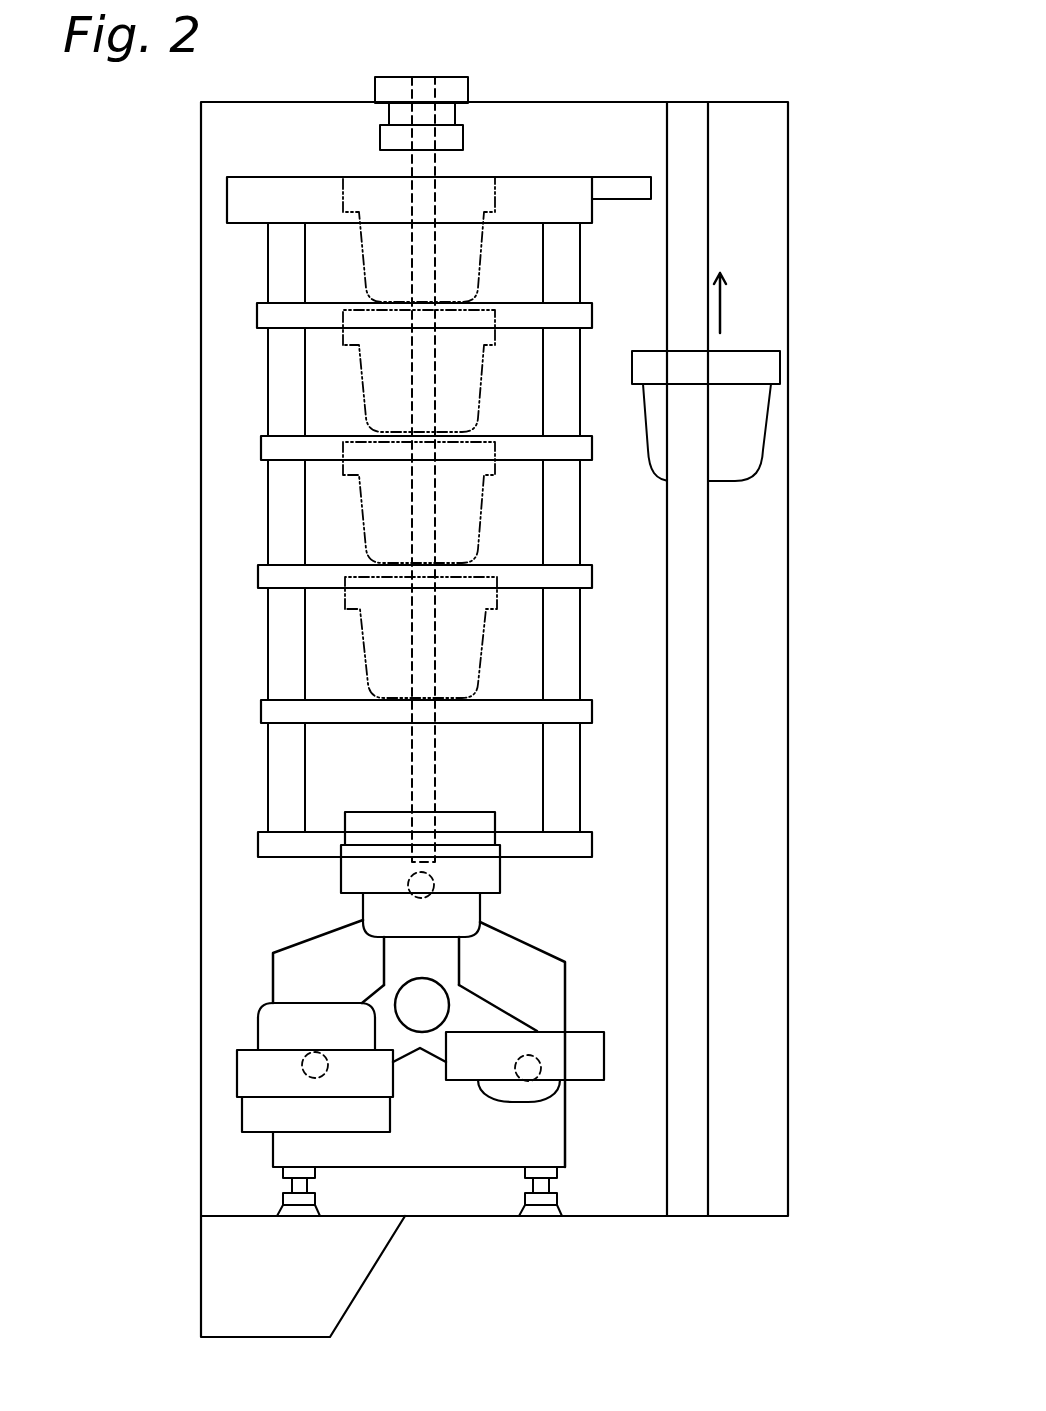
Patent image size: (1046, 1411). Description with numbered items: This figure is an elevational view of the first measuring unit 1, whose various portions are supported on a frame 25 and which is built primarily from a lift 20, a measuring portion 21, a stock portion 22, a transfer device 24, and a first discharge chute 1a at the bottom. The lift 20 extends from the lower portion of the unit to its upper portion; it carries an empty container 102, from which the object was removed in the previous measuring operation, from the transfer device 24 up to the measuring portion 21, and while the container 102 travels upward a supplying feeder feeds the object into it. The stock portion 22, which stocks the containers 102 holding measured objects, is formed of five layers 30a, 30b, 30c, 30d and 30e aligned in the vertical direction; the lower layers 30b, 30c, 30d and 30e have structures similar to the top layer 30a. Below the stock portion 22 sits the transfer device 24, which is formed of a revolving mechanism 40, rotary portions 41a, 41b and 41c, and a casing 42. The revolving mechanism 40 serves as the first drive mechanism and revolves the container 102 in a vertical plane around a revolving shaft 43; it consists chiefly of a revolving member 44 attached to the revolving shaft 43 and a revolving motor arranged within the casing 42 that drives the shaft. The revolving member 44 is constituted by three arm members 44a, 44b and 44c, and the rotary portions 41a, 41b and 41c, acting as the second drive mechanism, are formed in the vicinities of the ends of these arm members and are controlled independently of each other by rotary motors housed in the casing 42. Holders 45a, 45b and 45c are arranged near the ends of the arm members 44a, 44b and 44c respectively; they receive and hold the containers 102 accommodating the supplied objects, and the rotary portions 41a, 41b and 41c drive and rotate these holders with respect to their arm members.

The first measuring unit 1 is at (840, 293).
The first discharge chute 1a is at (323, 1290).
The lift 20 is at (680, 685).
The measuring portion 21 is at (609, 153).
The stock portion 22 is at (167, 216).
The transfer device 24 is at (576, 951).
The frame 25 is at (790, 623).
The top layer 30a is at (314, 278).
The layer 30b is at (314, 404).
The layer 30c is at (314, 544).
The layer 30d is at (315, 676).
The layer 30e is at (315, 809).
The revolving mechanism 40 is at (454, 1099).
The rotary portion 41a is at (211, 1102).
The rotary portion 41b is at (346, 901).
The rotary portion 41c is at (587, 1101).
The casing 42 is at (318, 962).
The revolving shaft 43 is at (425, 1000).
The revolving member 44 is at (417, 1042).
The arm member 44a is at (380, 997).
The arm member 44b is at (515, 1087).
The arm member 44c is at (410, 947).
The holder 45a is at (250, 1065).
The holder 45b is at (485, 878).
The holder 45c is at (583, 1050).
The container 102 is at (739, 437).